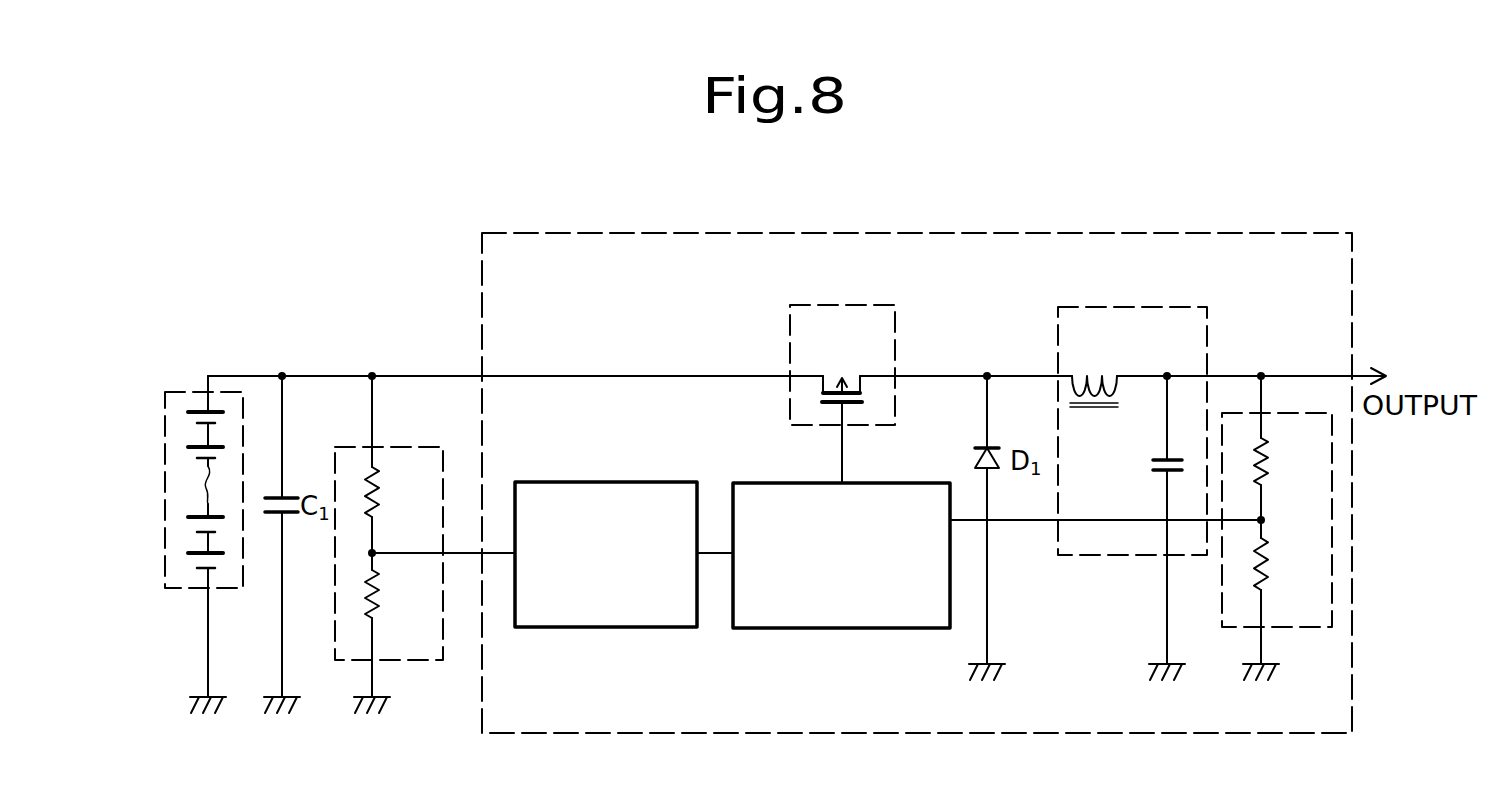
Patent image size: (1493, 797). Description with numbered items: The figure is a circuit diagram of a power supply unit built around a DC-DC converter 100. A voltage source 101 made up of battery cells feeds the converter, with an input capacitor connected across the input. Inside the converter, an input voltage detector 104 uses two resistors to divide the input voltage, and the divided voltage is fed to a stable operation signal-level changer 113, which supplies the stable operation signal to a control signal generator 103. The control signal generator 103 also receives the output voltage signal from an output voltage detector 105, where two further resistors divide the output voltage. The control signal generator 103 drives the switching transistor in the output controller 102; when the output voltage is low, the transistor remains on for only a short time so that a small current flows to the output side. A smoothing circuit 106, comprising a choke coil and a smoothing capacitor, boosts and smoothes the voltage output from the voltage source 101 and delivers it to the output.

The DC-DC converter 100 is at (598, 233).
The voltage source 101 is at (164, 478).
The output controller 102 is at (790, 348).
The control signal generator 103 is at (803, 472).
The input voltage detector 104 is at (383, 443).
The output voltage detector 105 is at (1300, 628).
The smoothing circuit 106 is at (1118, 307).
The stable operation signal-level changer 113 is at (590, 482).